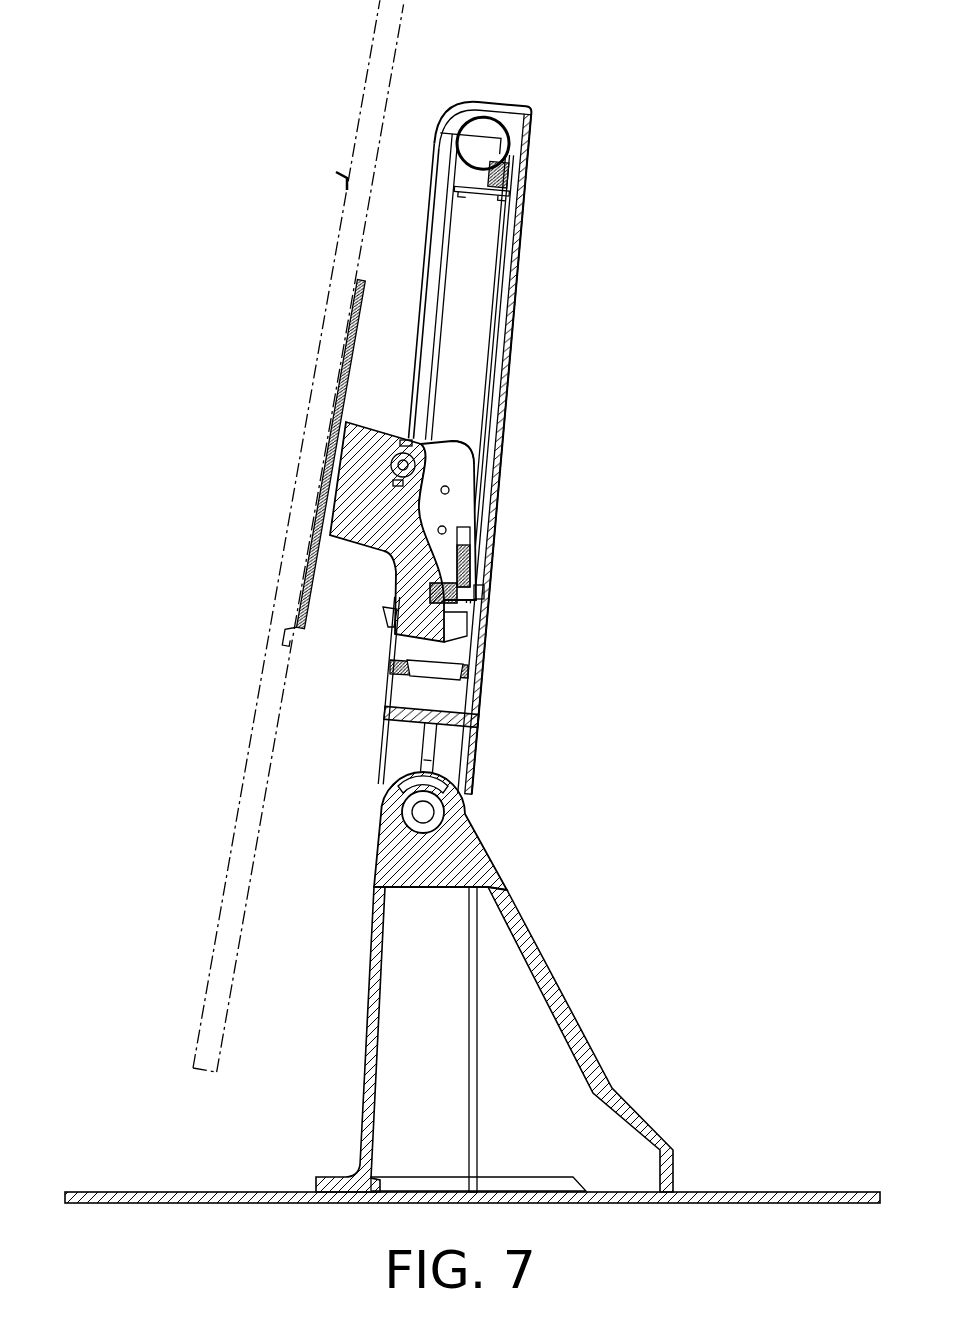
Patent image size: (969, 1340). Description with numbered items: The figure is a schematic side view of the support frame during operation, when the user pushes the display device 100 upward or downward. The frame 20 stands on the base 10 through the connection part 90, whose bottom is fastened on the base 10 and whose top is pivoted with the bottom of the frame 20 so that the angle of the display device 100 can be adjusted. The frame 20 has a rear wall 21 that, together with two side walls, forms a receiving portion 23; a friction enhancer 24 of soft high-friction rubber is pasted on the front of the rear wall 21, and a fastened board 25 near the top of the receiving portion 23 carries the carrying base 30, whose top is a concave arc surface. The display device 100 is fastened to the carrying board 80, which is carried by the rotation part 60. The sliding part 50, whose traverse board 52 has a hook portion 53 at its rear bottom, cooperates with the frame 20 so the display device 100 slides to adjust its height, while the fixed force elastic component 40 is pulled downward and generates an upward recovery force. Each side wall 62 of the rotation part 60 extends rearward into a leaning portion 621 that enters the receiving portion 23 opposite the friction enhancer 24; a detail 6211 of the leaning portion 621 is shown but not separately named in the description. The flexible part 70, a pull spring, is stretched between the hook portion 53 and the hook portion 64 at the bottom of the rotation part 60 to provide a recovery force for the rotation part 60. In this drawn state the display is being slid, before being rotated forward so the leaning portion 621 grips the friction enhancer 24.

The base 10 is at (765, 1190).
The frame 20 is at (522, 399).
The rear wall 21 is at (514, 342).
The receiving portion 23 is at (446, 712).
The friction enhancer 24 is at (505, 388).
The fastened board 25 is at (486, 190).
The carrying base 30 is at (513, 170).
The fixed force elastic component 40 is at (490, 100).
The sliding part 50 is at (476, 443).
The traverse board 52 is at (473, 550).
The hook portion 53 is at (485, 591).
The rotation part 60 is at (434, 472).
The side wall 62 is at (373, 425).
The leaning portion 621 is at (449, 683).
The tab of bottom plate 6211 is at (465, 633).
The hook portion 64 is at (386, 628).
The flexible part 70 is at (470, 605).
The carrying board 80 is at (334, 592).
The connection part 90 is at (565, 992).
The display device 100 is at (336, 176).